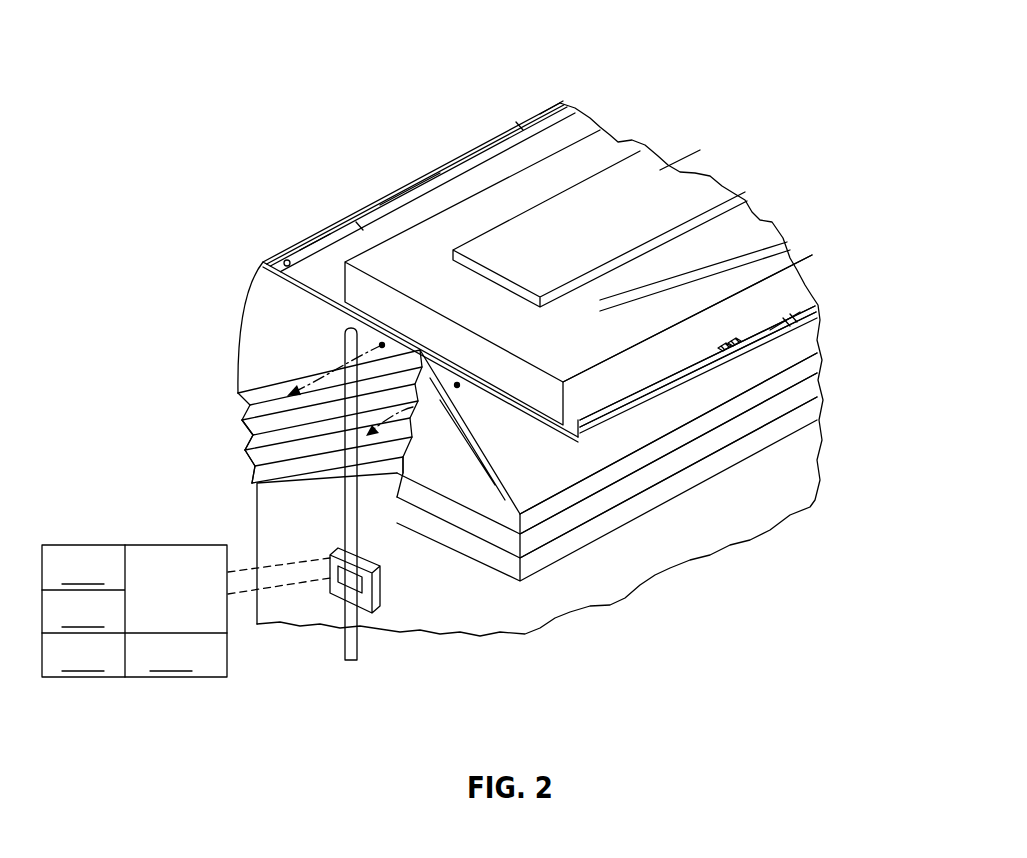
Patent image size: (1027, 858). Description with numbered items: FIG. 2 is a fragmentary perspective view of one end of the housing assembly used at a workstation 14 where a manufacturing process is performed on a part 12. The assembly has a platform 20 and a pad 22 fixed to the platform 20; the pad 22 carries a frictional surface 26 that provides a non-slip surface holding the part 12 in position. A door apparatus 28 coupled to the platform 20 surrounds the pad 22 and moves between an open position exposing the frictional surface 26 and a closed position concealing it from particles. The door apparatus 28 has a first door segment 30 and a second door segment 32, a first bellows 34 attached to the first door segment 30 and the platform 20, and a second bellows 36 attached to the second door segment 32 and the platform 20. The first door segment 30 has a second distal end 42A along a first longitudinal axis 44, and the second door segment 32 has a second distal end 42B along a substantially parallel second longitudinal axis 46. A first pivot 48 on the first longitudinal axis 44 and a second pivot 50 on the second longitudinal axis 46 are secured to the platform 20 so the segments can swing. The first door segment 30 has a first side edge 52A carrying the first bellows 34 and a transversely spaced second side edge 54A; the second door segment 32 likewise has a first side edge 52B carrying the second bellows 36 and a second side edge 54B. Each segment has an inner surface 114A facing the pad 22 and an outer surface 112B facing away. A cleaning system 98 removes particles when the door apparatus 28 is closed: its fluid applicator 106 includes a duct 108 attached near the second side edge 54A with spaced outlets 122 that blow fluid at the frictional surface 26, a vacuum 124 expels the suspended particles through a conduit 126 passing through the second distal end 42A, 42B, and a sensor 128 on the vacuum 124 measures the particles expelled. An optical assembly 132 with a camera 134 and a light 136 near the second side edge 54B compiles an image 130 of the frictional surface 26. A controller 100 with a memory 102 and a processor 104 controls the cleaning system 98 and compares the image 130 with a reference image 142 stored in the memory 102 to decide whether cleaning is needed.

The part 12 is at (659, 170).
The workstation 14 is at (793, 61).
The platform 20 is at (800, 280).
The pad 22 is at (750, 224).
The frictional surface 26 is at (618, 141).
The door apparatus 28 is at (298, 439).
The first door segment 30 is at (265, 256).
The second door segment 32 is at (805, 340).
The first bellows 34 is at (250, 430).
The second bellows 36 is at (808, 403).
The second distal end of the first door segment 42A is at (245, 303).
The second distal end of the second door segment 42B is at (505, 480).
The first longitudinal axis 44 is at (345, 360).
The second longitudinal axis 46 is at (413, 407).
The first pivot 48 is at (382, 345).
The second pivot 50 is at (457, 385).
The first side edge of the first door segment 52A is at (420, 445).
The first side edge of the second door segment 52B is at (253, 439).
The second side edge of the first door segment 54A is at (453, 155).
The second side edge of the second door segment 54B is at (650, 400).
The cleaning system 98 is at (580, 420).
The controller 100 is at (133, 647).
The memory 102 is at (84, 569).
The processor 104 is at (84, 612).
The fluid applicator 106 is at (313, 252).
The duct 108 is at (567, 104).
The outer surface of the second door segment 112B is at (700, 403).
The inner surface of the first door segment 114A is at (412, 213).
The outlets 122 is at (520, 126).
The vacuum 124 is at (388, 620).
The conduit 126 is at (342, 526).
The sensor 128 is at (330, 593).
The image 130 is at (84, 656).
The optical assembly 132 is at (812, 296).
The camera 134 is at (729, 335).
The light 136 is at (705, 345).
The reference image 142 is at (172, 656).